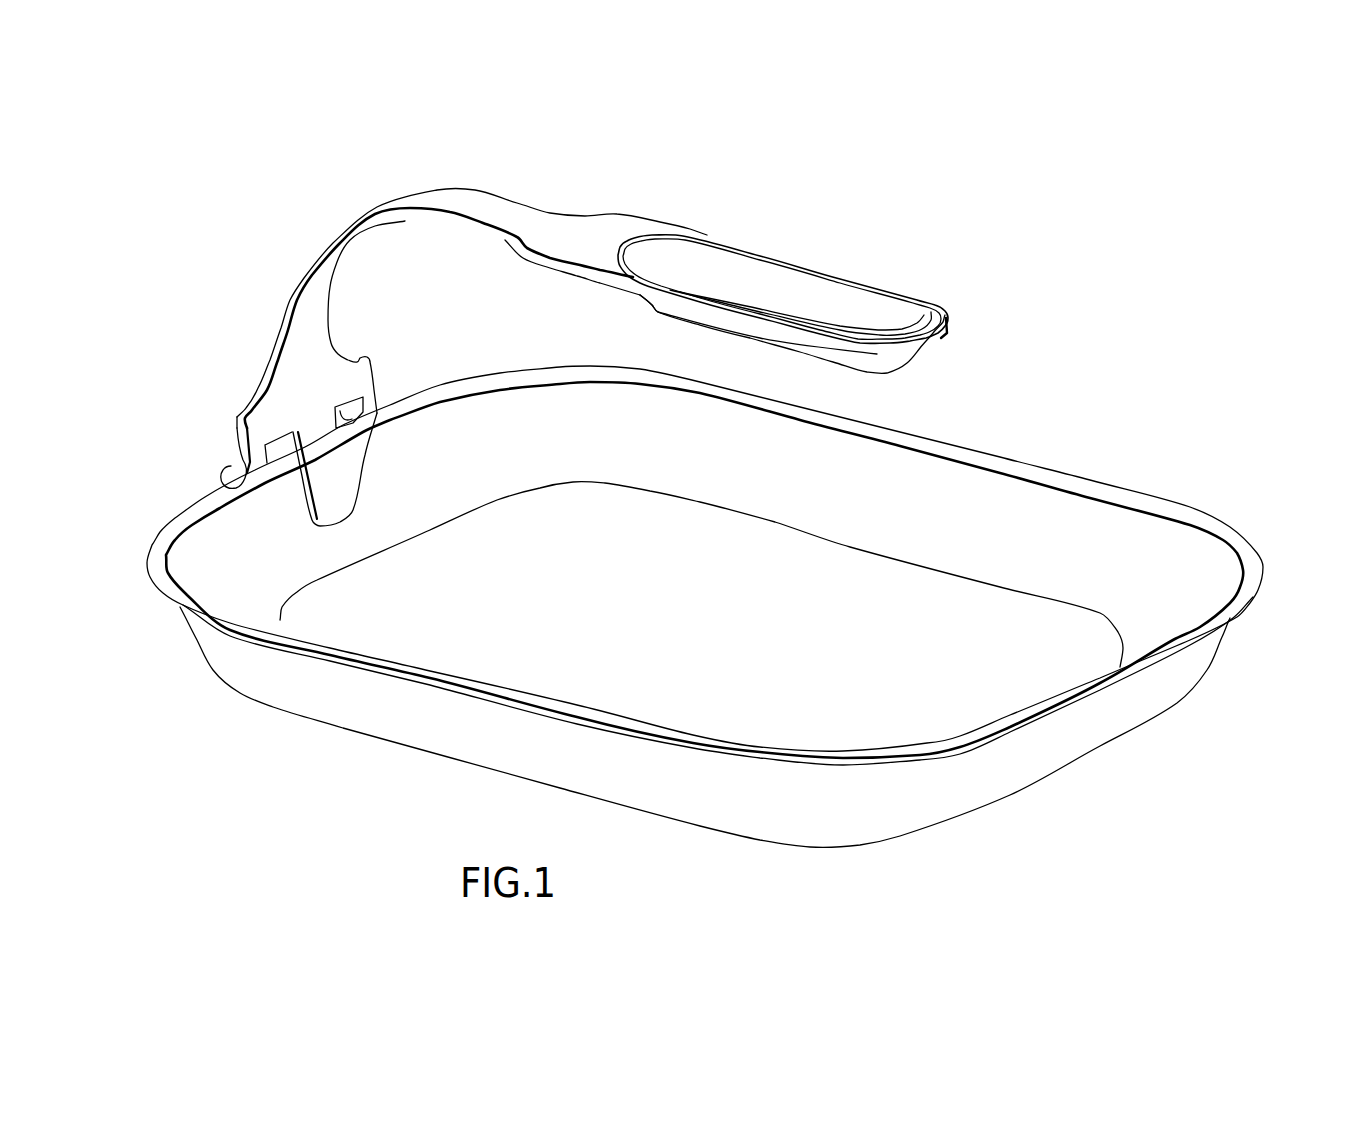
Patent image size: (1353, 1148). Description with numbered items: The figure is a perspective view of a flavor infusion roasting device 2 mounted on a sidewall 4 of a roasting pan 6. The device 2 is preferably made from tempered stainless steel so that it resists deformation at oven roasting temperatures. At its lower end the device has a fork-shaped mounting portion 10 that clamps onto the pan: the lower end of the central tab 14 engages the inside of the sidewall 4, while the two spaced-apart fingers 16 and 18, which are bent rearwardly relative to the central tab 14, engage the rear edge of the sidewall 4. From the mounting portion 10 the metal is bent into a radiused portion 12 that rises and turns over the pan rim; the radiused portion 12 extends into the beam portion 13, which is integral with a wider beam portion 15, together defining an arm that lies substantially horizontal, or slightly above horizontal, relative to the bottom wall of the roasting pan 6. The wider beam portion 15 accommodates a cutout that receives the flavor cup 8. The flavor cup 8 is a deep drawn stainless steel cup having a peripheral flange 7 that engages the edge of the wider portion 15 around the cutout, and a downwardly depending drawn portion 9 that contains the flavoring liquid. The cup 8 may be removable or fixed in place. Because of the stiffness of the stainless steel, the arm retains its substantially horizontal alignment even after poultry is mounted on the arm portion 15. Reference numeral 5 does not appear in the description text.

The flavor infusion roasting device 2 is at (605, 199).
The sidewall 4 is at (450, 392).
The bowl support portion 5 is at (664, 223).
The roasting pan 6 is at (1122, 471).
The peripheral flange 7 is at (884, 295).
The flavor cup 8 is at (716, 248).
The downwardly depending drawn portion 9 is at (900, 369).
The fork-shaped mounting portion 10 is at (236, 426).
The radiused portion 12 is at (418, 190).
The beam portion 13 is at (513, 197).
The central tab 14 is at (344, 487).
The wider beam portion 15 is at (580, 280).
The finger 16 is at (220, 479).
The finger 18 is at (377, 410).